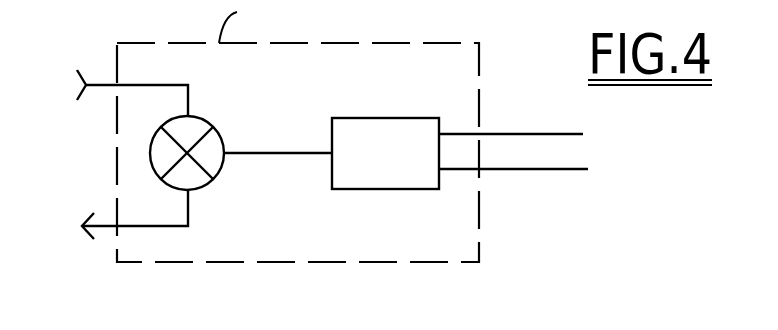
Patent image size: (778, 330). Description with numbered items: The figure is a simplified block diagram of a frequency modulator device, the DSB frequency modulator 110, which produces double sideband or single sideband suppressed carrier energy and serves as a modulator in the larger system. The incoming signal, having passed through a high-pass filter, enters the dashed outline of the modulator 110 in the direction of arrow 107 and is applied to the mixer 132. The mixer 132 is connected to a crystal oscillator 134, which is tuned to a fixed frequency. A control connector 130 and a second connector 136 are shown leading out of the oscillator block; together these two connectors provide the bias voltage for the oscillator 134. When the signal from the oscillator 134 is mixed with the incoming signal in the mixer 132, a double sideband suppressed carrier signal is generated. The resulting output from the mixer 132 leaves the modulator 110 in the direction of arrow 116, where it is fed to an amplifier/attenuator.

The arrow 107 is at (98, 82).
The modulator 110 is at (292, 270).
The arrow 116 is at (102, 228).
The control connector 130 is at (574, 134).
The mixer 132 is at (215, 173).
The crystal oscillator 134 is at (410, 171).
The connector 136 is at (584, 170).